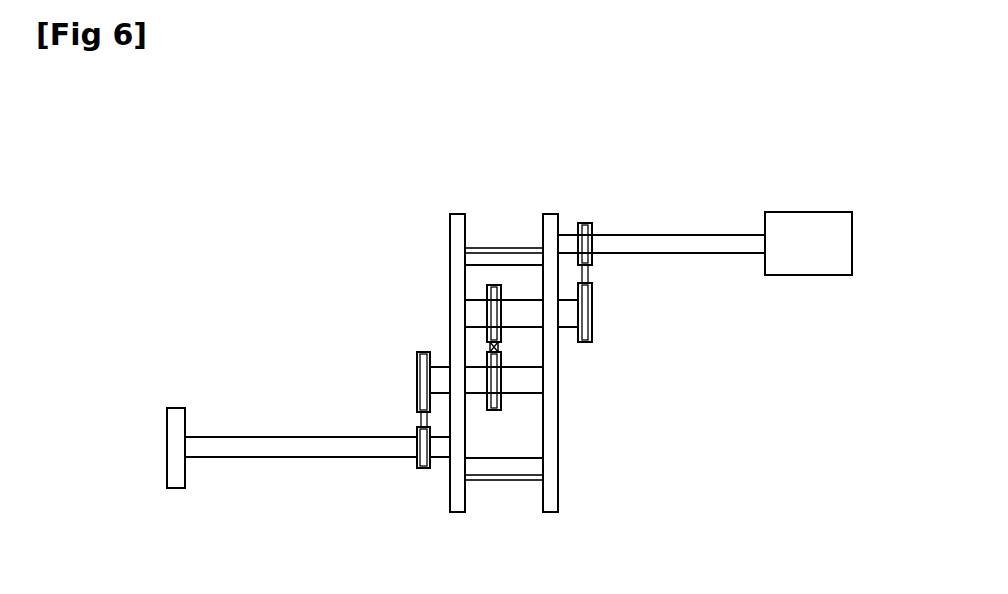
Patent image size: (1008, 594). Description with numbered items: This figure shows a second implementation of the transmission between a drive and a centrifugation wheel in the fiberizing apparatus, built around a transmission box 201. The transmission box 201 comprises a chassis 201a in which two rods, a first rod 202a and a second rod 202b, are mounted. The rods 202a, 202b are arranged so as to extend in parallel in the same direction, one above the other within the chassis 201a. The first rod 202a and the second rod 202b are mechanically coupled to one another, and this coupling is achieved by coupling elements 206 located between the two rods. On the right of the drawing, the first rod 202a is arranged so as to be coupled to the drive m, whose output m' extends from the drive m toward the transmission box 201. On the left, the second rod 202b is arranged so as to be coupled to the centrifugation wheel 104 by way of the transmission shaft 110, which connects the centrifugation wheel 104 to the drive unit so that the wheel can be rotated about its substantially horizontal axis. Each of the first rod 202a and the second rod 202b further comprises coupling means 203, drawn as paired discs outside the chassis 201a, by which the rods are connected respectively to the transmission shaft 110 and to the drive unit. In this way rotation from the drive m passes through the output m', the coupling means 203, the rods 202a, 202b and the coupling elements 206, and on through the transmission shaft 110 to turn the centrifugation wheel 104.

The transmission box 201 is at (532, 302).
The chassis 201a is at (550, 213).
The first rod 202a is at (475, 312).
The second rod 202b is at (518, 382).
The coupling means 203 is at (403, 414).
The coupling elements 206 is at (524, 348).
The centrifugation wheel 104 is at (173, 413).
The transmission shaft 110 is at (315, 458).
The drive m is at (808, 243).
The output m' is at (661, 206).